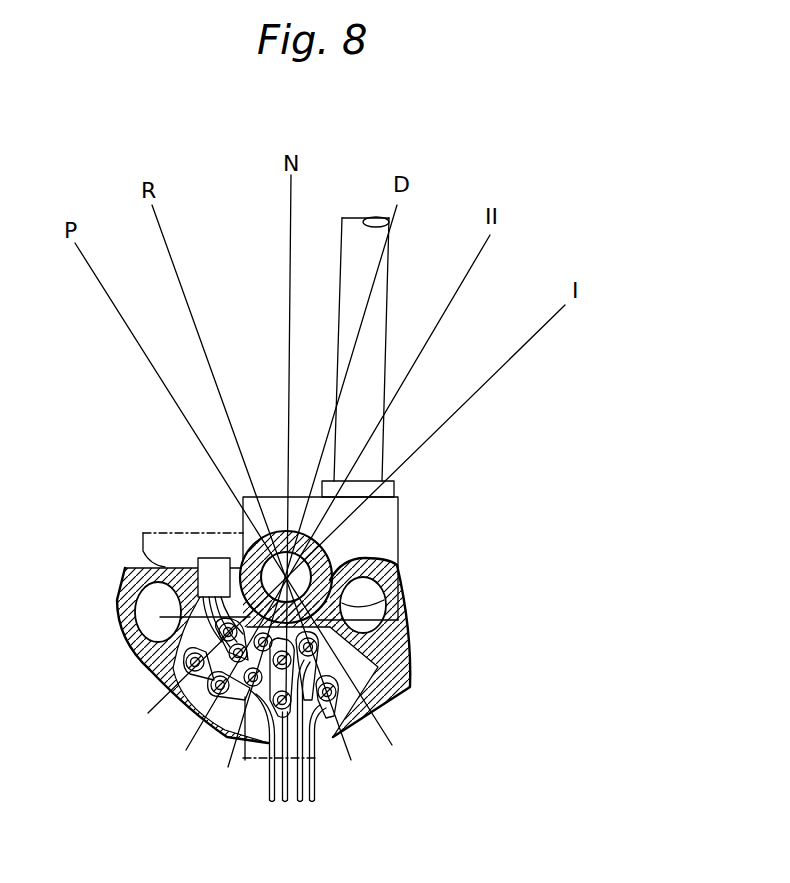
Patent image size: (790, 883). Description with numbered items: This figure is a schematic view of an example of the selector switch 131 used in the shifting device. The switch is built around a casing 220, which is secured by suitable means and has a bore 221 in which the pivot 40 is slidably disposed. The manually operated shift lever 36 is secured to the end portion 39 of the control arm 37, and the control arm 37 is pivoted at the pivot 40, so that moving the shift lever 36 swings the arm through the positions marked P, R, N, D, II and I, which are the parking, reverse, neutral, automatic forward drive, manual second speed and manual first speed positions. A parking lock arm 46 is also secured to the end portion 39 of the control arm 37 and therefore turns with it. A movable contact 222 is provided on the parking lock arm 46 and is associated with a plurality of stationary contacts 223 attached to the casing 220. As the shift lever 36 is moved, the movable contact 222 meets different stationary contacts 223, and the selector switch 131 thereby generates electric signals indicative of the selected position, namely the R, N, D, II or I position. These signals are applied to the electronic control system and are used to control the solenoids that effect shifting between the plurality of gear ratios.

The shift lever 36 is at (388, 283).
The control arm 37 is at (160, 613).
The end portion 39 is at (395, 513).
The pivot 40 is at (333, 548).
The parking lock arm 46 is at (262, 760).
The selector switch 131 is at (445, 580).
The casing 220 is at (393, 640).
The bore 221 is at (342, 598).
The movable contact 222 is at (262, 700).
The stationary contacts 223 is at (205, 655).